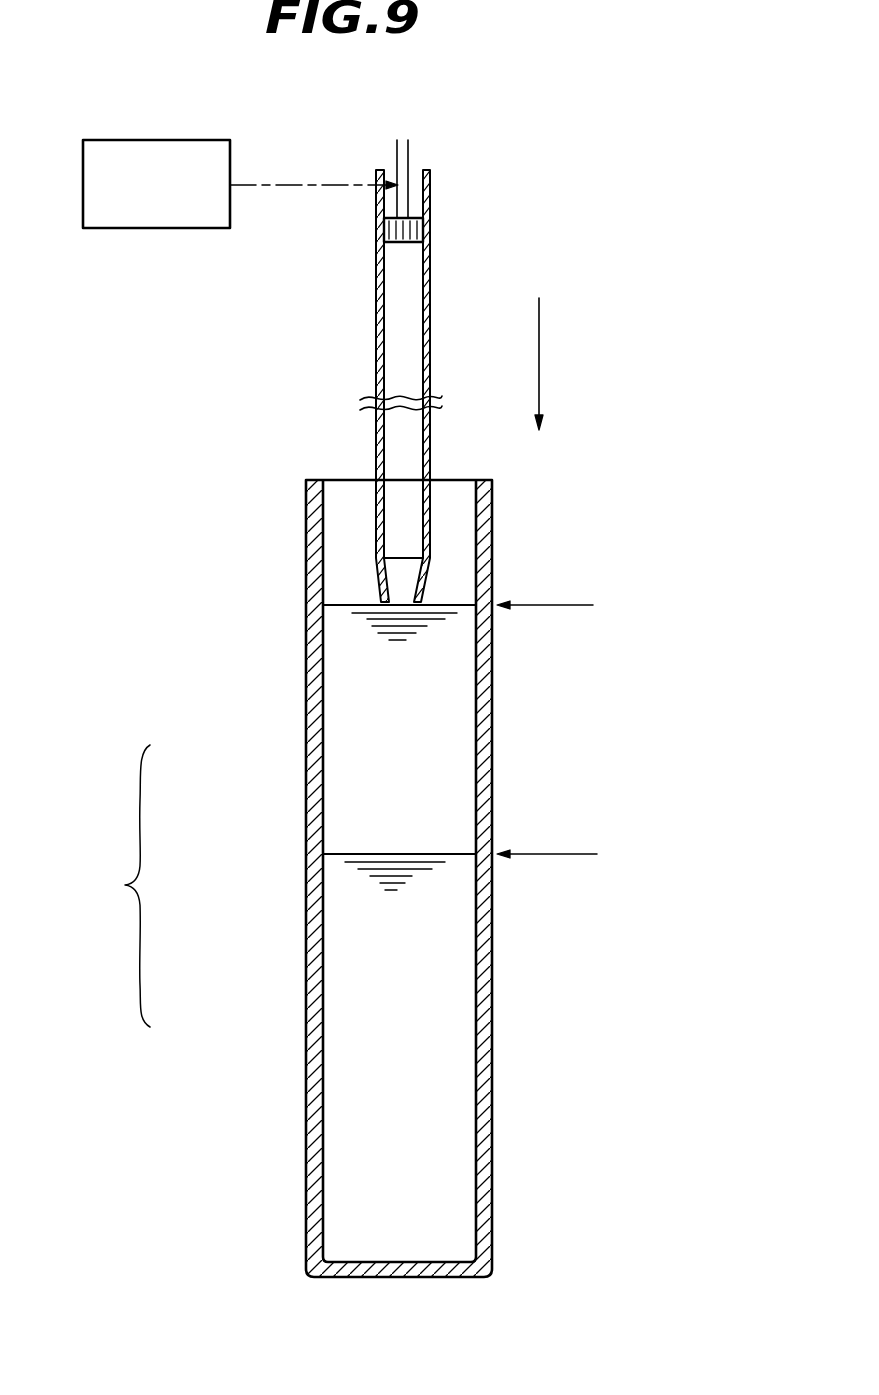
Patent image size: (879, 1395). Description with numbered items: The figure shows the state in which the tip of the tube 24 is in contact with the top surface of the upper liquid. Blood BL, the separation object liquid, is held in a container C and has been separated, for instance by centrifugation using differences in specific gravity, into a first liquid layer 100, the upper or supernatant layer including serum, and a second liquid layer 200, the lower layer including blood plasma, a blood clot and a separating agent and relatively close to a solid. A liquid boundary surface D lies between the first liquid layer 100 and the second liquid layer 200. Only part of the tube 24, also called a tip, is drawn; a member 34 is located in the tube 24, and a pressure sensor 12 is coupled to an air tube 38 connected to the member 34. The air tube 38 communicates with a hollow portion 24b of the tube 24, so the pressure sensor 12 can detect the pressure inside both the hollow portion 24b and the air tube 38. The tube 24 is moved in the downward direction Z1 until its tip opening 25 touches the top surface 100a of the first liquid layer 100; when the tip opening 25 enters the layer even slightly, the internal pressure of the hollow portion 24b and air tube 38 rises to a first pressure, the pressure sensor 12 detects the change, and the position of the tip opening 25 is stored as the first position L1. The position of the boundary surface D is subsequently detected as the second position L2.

The pressure sensor 12 is at (170, 228).
The air tube 38 is at (408, 153).
The member 34 is at (419, 228).
The tube 24 is at (407, 437).
The hollow portion 24b is at (393, 312).
The tip opening 25 is at (427, 598).
The direction Z1 is at (539, 362).
The top surface 100a is at (357, 602).
The first position L1 is at (568, 615).
The first liquid layer 100 is at (370, 753).
The liquid boundary surface D is at (405, 852).
The second position L2 is at (566, 860).
The blood BL is at (113, 886).
The second liquid layer 200 is at (358, 1002).
The container C is at (435, 1278).